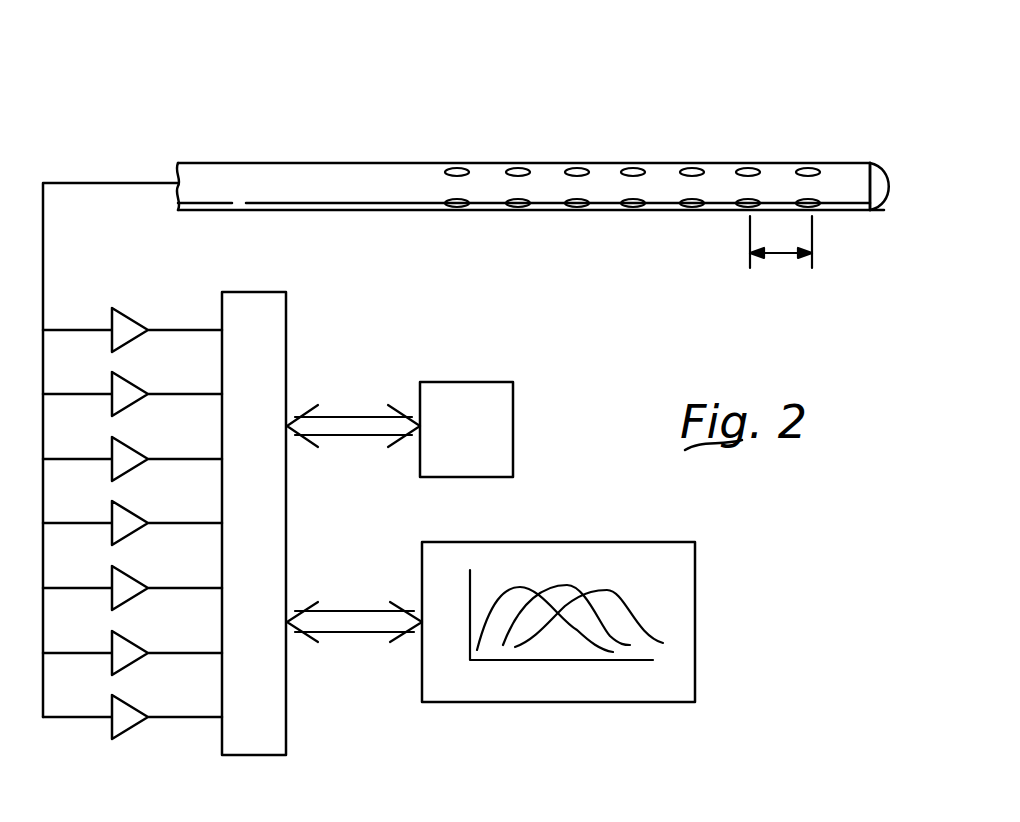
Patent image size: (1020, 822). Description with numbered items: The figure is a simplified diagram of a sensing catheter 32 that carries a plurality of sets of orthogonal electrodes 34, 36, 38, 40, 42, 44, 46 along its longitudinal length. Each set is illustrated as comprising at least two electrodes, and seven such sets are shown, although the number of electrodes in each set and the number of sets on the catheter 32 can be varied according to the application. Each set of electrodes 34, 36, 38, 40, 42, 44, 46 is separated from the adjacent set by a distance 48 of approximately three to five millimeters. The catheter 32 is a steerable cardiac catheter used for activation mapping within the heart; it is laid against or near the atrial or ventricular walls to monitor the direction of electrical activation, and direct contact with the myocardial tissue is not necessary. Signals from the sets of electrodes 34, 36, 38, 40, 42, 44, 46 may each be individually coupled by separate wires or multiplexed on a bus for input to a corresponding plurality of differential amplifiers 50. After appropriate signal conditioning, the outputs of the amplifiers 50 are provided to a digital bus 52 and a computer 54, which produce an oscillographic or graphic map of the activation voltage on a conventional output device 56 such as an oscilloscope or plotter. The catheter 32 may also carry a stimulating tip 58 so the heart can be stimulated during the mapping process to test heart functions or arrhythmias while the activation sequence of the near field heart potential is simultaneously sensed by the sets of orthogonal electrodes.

The sensing catheter 32 is at (864, 124).
The set of orthogonal electrodes 34 is at (820, 204).
The set of orthogonal electrodes 36 is at (748, 201).
The set of orthogonal electrodes 38 is at (692, 201).
The set of orthogonal electrodes 40 is at (633, 201).
The set of orthogonal electrodes 42 is at (577, 201).
The set of orthogonal electrodes 44 is at (518, 201).
The set of orthogonal electrodes 46 is at (456, 201).
The distance 48 is at (783, 262).
The differential amplifiers 50 is at (186, 745).
The digital bus 52 is at (286, 292).
The computer 54 is at (513, 382).
The output device 56 is at (695, 542).
The stimulating tip 58 is at (882, 214).